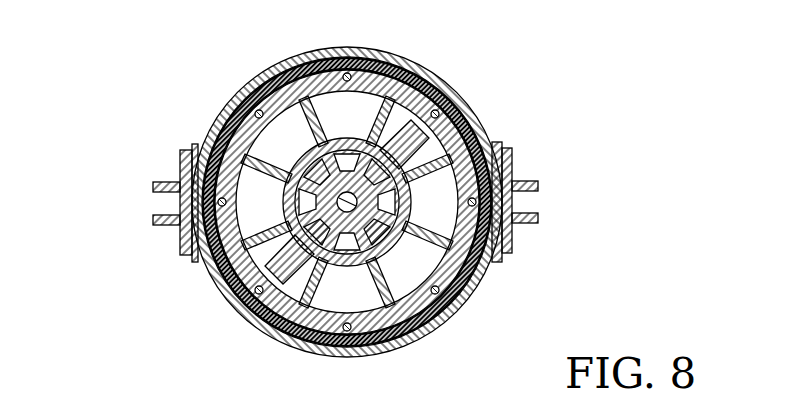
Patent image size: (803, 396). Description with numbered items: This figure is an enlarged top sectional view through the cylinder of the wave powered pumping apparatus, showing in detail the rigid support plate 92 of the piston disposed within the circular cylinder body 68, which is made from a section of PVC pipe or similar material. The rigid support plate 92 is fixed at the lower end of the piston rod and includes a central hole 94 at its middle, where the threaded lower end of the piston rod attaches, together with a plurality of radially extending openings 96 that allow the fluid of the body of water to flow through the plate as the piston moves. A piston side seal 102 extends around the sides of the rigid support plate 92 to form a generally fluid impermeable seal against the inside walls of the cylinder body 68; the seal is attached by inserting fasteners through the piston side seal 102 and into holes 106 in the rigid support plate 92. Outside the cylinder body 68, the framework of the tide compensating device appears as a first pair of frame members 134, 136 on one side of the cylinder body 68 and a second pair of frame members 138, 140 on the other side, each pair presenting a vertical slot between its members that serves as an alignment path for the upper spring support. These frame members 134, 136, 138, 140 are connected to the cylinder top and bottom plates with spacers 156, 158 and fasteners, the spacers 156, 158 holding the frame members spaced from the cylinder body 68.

The cylinder body 68 is at (418, 68).
The piston side seal 102 is at (270, 73).
The rigid support plate 92 is at (330, 235).
The central hole 94 is at (338, 212).
The radially extending openings 96 is at (378, 232).
The holes 106 is at (353, 290).
The frame member 134 is at (173, 226).
The frame member 136 is at (175, 183).
The frame member 138 is at (520, 222).
The frame member 140 is at (522, 181).
The spacer 156 is at (192, 262).
The spacer 158 is at (505, 258).